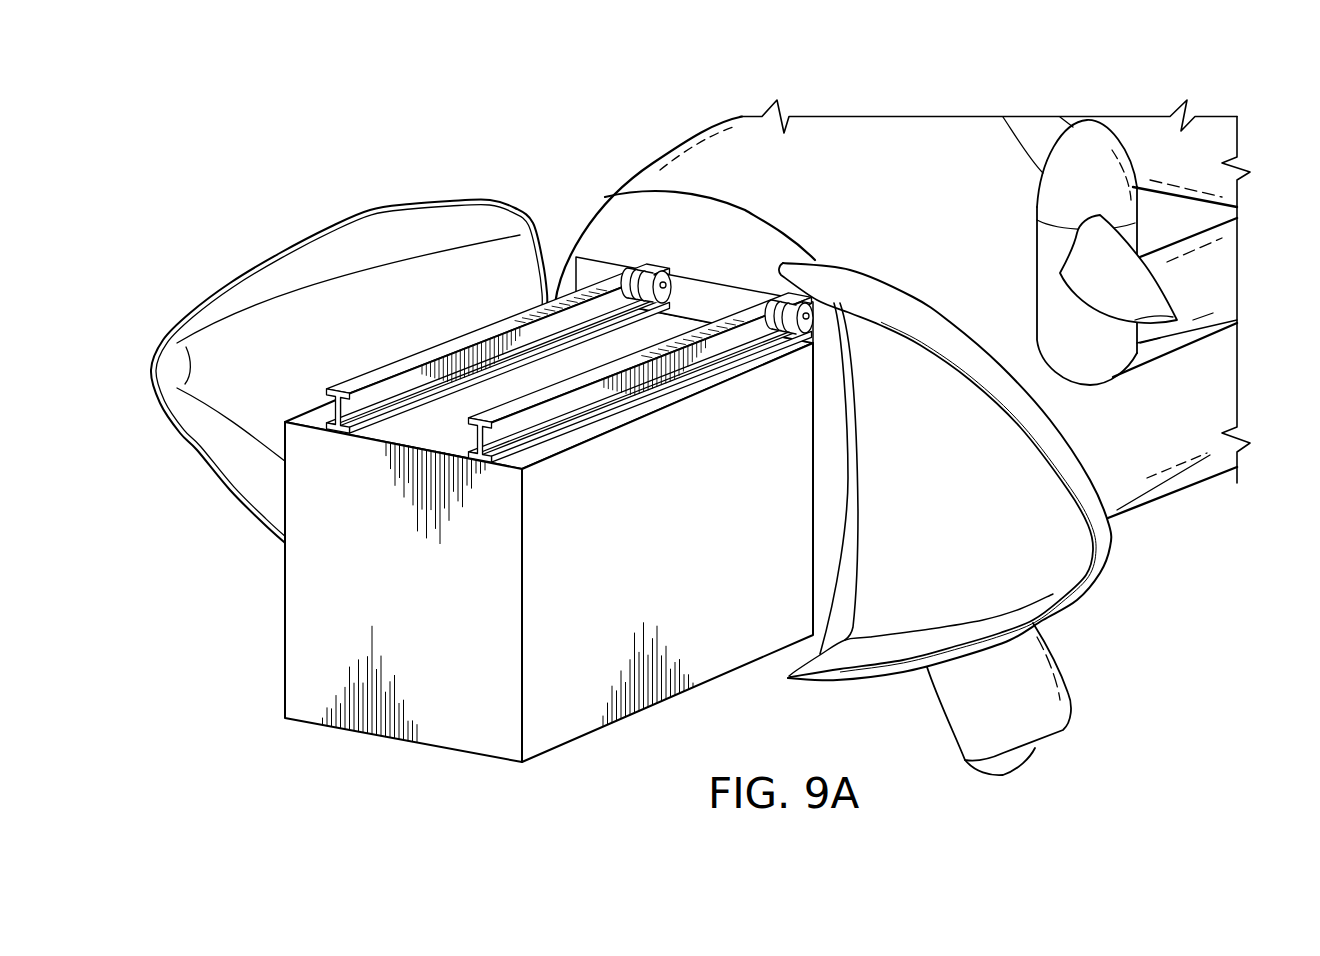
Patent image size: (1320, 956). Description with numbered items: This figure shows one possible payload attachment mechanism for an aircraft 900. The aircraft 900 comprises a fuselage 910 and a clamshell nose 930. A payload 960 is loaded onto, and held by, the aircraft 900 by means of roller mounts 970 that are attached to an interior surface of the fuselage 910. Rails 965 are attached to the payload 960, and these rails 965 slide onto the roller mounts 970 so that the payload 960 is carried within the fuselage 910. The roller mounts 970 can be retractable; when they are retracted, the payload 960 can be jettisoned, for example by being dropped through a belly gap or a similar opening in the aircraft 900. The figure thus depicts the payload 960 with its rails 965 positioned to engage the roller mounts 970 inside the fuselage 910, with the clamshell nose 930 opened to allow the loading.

The aircraft 900 is at (455, 128).
The fuselage 910 is at (665, 152).
The clamshell nose 930 is at (1103, 568).
The payload 960 is at (455, 750).
The rails 965 is at (392, 367).
The roller mounts 970 is at (664, 271).